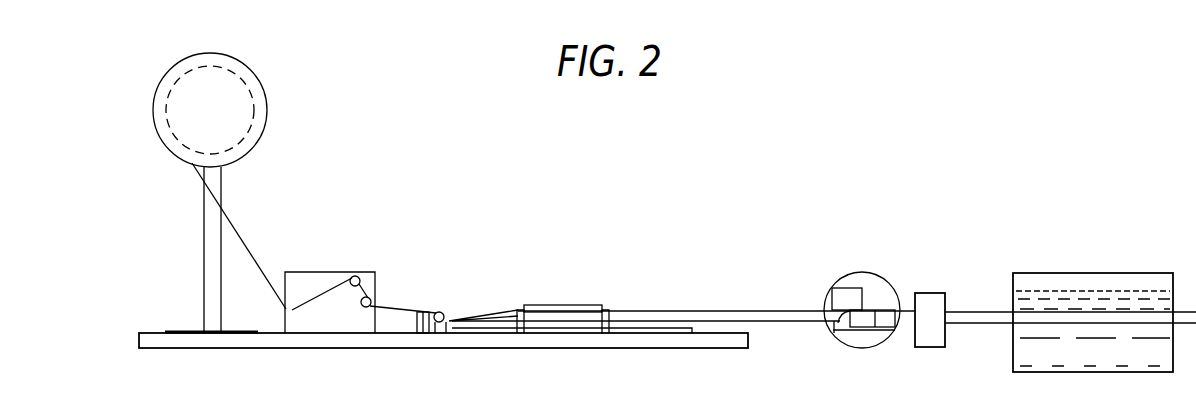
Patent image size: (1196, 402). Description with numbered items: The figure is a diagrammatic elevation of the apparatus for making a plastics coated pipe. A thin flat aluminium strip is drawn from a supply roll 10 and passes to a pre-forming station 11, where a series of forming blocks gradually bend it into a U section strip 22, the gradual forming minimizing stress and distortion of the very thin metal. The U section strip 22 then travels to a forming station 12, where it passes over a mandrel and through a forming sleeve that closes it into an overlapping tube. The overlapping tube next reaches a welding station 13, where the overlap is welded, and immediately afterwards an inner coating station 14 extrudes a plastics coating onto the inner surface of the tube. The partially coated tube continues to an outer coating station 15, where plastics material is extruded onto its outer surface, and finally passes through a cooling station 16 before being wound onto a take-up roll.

The supply roll 10 is at (267, 107).
The pre-forming station 11 is at (569, 297).
The U section strip 22 is at (647, 313).
The welding station 13 is at (880, 294).
The inner coating station 14 is at (877, 303).
The forming station 12 is at (834, 331).
The outer coating station 15 is at (942, 296).
The cooling station 16 is at (1073, 273).